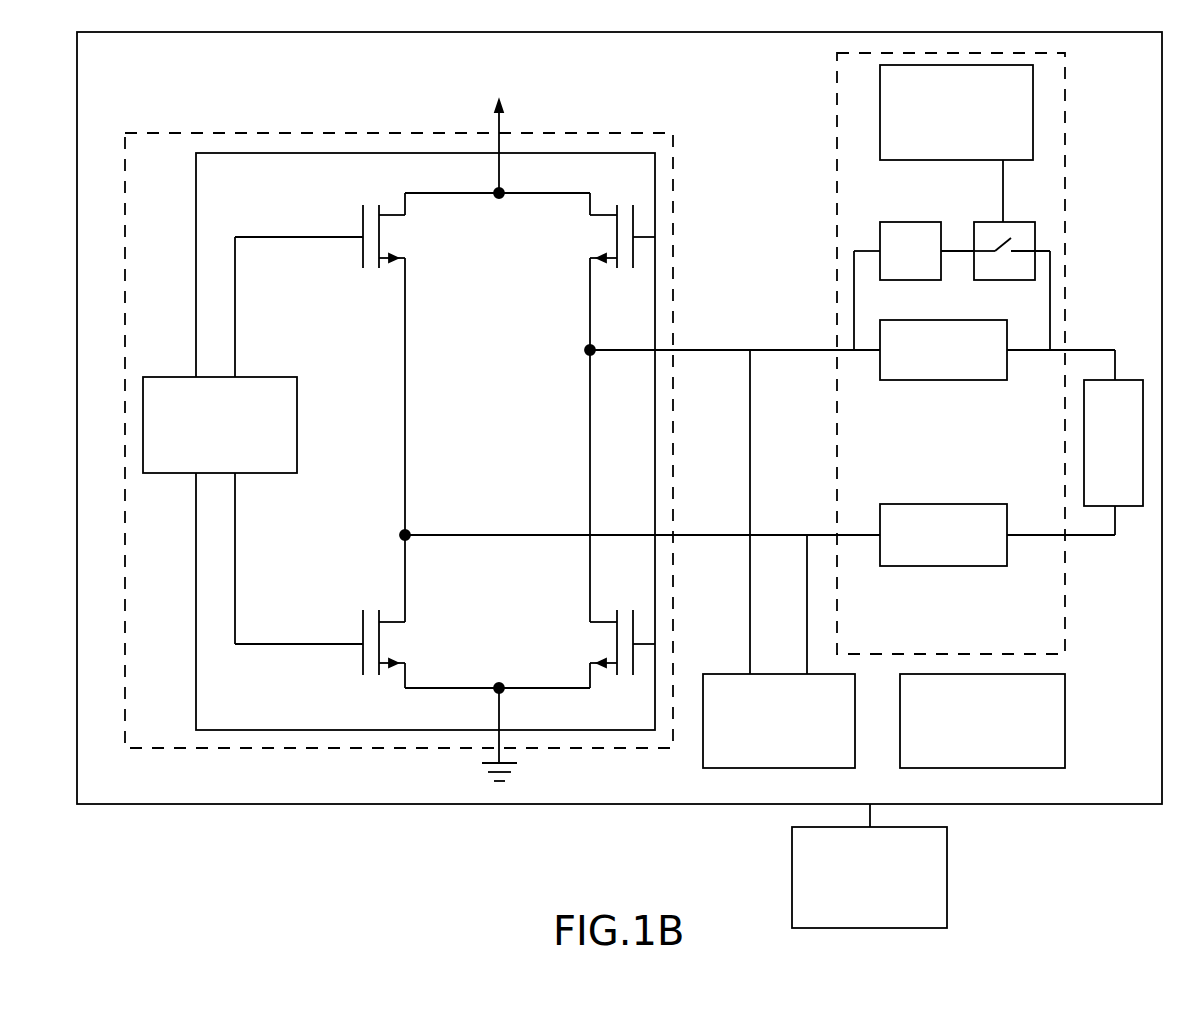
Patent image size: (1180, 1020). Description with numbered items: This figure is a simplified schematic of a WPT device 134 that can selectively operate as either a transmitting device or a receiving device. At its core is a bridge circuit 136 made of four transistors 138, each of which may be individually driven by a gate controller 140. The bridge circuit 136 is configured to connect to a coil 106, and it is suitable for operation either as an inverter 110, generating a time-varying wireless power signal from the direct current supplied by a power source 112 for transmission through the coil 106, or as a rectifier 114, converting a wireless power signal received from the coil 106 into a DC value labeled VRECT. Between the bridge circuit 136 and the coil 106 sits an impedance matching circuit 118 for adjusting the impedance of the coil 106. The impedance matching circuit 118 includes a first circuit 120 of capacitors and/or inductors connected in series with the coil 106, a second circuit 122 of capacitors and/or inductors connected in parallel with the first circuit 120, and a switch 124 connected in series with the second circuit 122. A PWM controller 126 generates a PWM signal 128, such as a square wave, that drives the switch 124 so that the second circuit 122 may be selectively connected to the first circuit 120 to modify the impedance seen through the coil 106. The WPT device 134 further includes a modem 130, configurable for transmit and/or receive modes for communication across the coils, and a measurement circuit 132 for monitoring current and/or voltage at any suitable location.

The WPT device 134 is at (118, 57).
The bridge circuit 136 is at (127, 133).
The inverter 110 is at (242, 133).
The rectifier 114 is at (310, 133).
The transistors 138 is at (588, 238).
The gate controller 140 is at (183, 401).
The impedance matching circuit 118 is at (878, 649).
The PWM controller 126 is at (921, 95).
The PWM signal 128 is at (936, 196).
The switch 124 is at (1020, 222).
The second circuit 122 is at (893, 262).
The first circuit 120 is at (926, 361).
The coil 106 is at (1096, 441).
The modem 130 is at (741, 700).
The measurement circuit 132 is at (938, 700).
The power source 112 is at (833, 855).